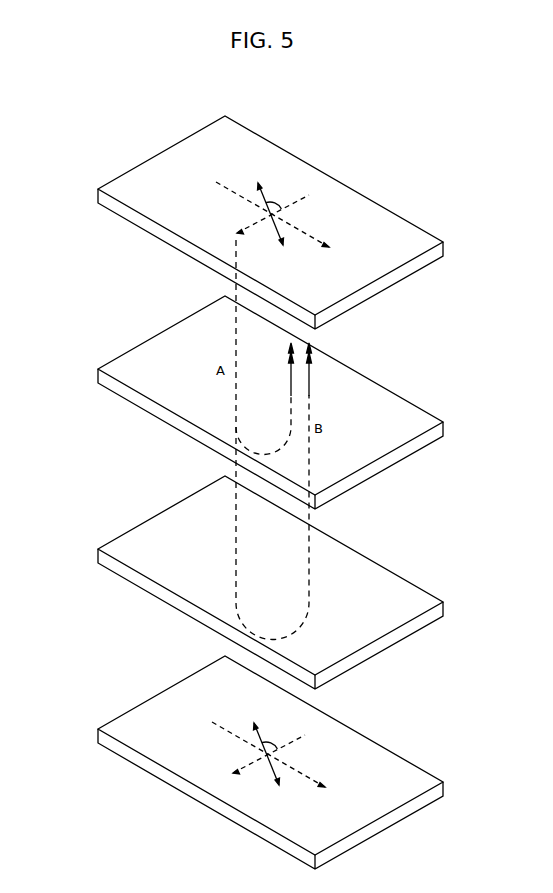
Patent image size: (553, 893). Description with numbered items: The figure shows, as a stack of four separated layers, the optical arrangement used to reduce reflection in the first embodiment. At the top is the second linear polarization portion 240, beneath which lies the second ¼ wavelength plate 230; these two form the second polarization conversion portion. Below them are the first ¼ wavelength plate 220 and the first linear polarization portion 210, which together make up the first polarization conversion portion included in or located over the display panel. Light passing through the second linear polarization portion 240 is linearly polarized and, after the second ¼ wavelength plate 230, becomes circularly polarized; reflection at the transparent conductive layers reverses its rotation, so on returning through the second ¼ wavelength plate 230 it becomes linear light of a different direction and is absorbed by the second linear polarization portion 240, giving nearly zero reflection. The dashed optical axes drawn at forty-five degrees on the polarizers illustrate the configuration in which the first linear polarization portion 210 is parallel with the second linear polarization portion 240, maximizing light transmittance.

The second linear polarization portion 240 is at (446, 252).
The second ¼ wavelength plate 230 is at (446, 432).
The first ¼ wavelength plate 220 is at (446, 612).
The first linear polarization portion 210 is at (446, 792).